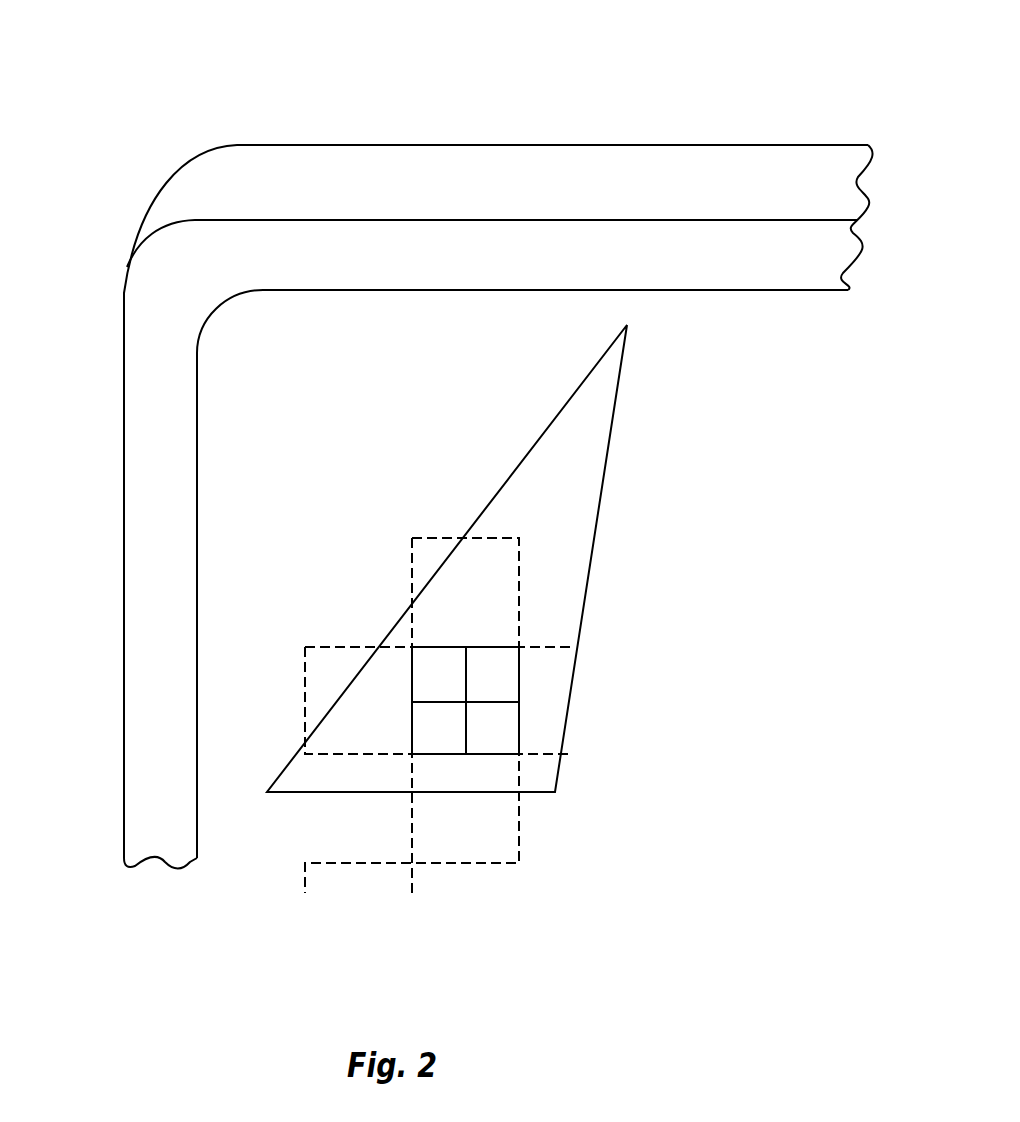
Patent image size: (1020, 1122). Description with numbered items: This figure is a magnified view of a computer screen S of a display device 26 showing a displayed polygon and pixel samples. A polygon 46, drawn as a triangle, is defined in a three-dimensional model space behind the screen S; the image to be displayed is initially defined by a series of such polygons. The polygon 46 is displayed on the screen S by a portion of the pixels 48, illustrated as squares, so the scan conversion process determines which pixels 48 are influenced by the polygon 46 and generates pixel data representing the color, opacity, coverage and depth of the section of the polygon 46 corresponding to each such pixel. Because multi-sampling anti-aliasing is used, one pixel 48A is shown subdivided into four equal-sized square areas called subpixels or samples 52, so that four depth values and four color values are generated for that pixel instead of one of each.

The display device 26 is at (518, 161).
The screen S is at (220, 422).
The polygon 46 is at (578, 518).
The pixels 48 is at (442, 865).
The pixel 48A is at (520, 735).
The subpixels or samples 52 is at (430, 715).